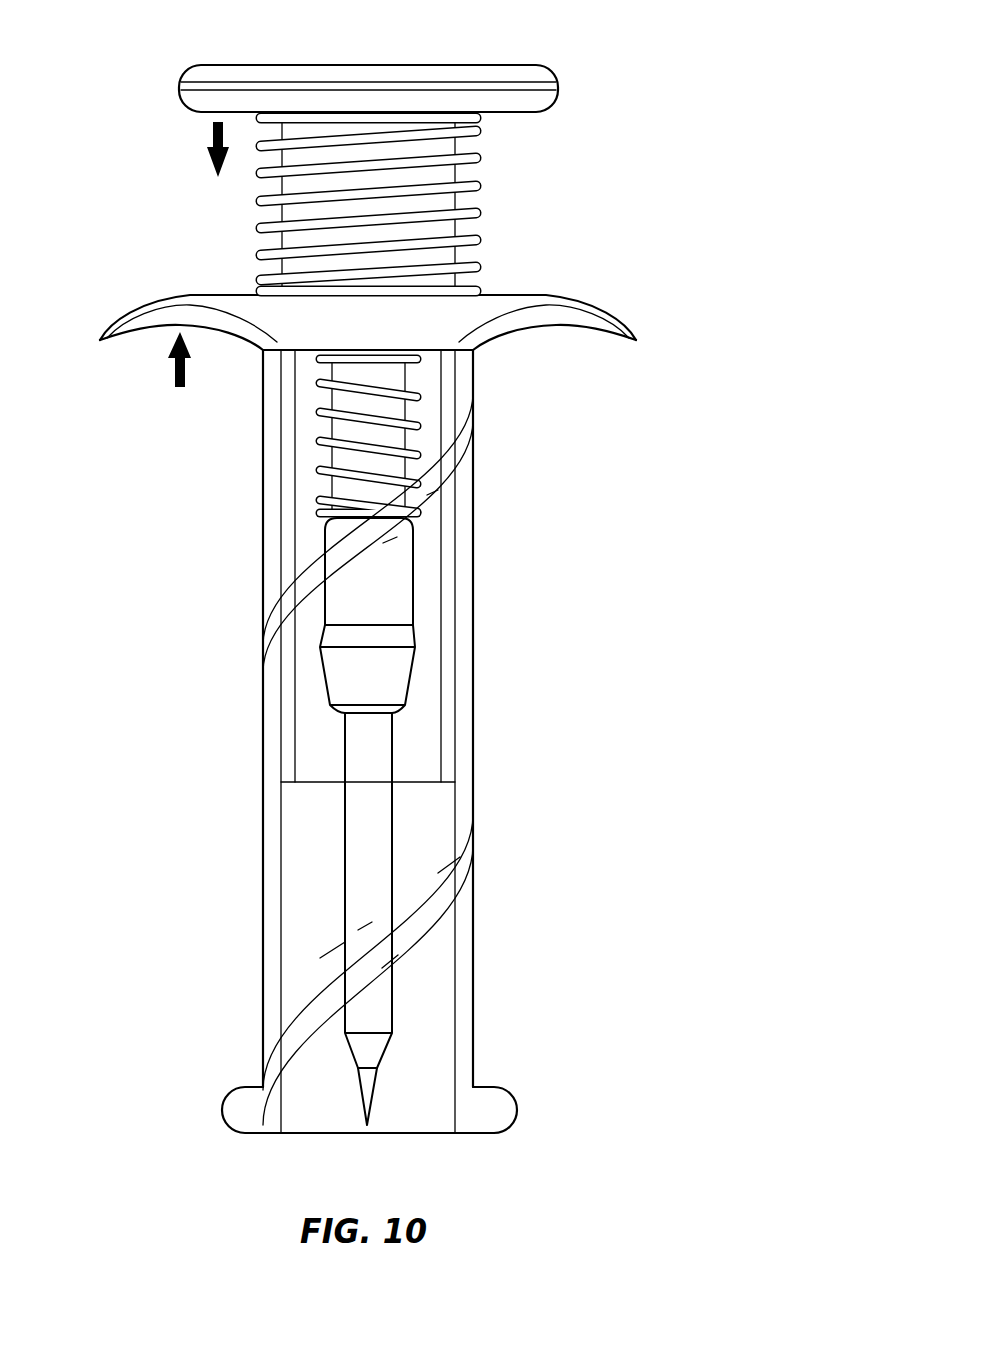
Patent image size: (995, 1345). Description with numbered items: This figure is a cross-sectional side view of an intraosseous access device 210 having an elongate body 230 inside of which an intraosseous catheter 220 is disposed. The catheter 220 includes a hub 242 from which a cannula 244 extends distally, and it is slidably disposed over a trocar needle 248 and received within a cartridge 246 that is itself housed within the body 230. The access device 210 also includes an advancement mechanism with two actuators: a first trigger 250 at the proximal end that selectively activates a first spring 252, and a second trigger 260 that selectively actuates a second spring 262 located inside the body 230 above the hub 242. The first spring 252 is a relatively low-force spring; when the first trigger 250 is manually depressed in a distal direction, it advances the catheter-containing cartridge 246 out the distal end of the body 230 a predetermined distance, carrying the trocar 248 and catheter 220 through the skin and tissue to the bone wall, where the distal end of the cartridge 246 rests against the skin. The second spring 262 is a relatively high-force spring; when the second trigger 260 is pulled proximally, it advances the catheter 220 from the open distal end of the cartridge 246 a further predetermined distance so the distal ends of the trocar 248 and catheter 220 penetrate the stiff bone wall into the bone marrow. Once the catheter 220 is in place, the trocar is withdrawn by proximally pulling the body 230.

The intraosseous access device 210 is at (411, 595).
The intraosseous catheter 220 is at (420, 805).
The elongate body 230 is at (263, 703).
The hub 242 is at (400, 663).
The cannula 244 is at (392, 1031).
The cartridge 246 is at (288, 449).
The trocar needle 248 is at (377, 1092).
The first trigger 250 is at (192, 68).
The first spring 252 is at (482, 233).
The second trigger 260 is at (200, 293).
The second spring 262 is at (410, 425).